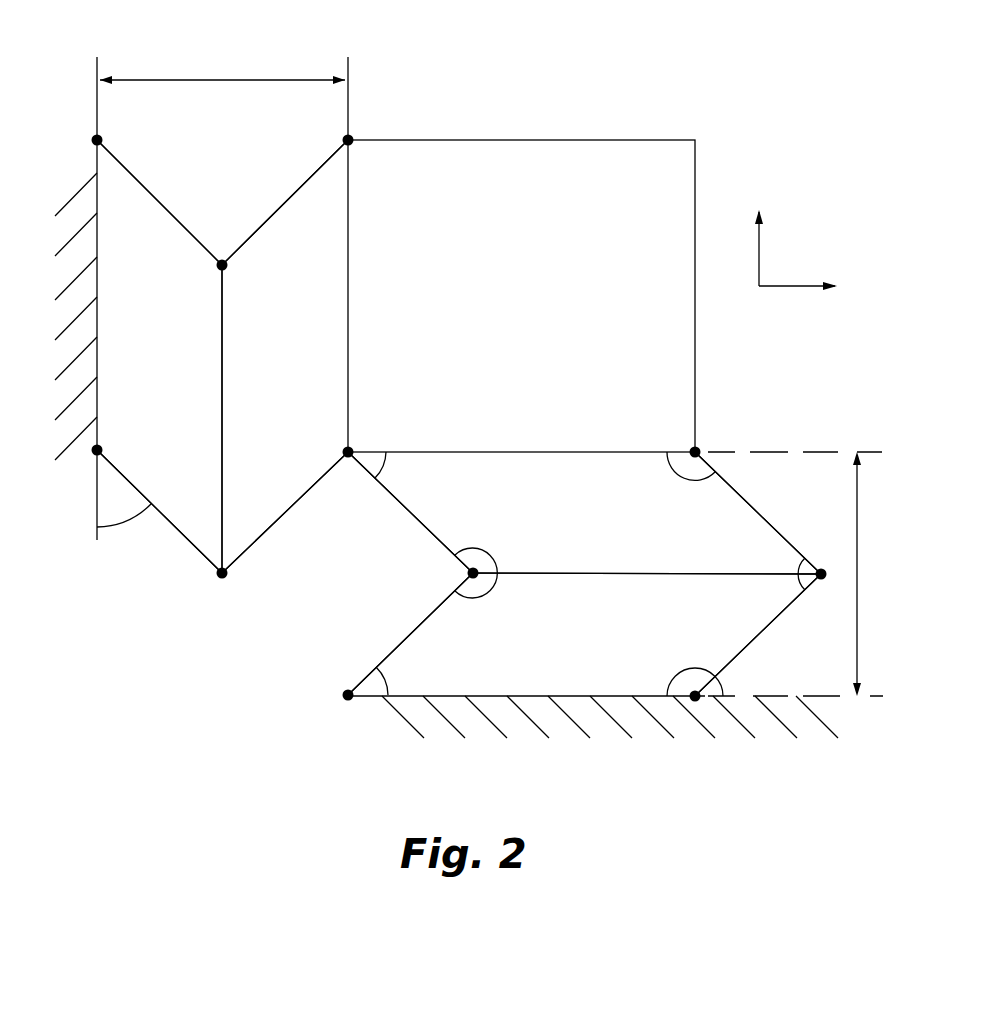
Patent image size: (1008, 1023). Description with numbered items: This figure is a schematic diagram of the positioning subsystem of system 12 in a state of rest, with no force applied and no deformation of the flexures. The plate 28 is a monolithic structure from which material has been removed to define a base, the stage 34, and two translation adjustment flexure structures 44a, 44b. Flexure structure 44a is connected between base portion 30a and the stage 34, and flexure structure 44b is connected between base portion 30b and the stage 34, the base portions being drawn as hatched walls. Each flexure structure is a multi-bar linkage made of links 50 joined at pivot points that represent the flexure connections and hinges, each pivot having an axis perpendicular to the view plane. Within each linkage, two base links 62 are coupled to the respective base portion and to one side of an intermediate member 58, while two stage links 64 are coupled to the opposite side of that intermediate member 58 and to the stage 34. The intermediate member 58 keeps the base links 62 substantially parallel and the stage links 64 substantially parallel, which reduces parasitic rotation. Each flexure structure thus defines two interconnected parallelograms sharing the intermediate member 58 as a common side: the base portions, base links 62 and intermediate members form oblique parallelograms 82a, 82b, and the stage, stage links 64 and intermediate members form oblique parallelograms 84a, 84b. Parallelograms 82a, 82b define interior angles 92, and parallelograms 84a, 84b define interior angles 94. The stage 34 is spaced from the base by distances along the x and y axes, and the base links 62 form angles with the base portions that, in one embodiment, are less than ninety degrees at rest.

The positioning system 12 is at (554, 847).
The plate 28 is at (690, 112).
The base portion 30a is at (594, 762).
The base portion 30b is at (57, 329).
The stage 34 is at (534, 333).
The translation adjustment flexure structure 44a is at (758, 490).
The translation adjustment flexure structure 44b is at (215, 170).
The link 50 is at (460, 418).
The intermediate member 58 is at (222, 377).
The base link 62 is at (138, 182).
The stage link 64 is at (299, 190).
The oblique parallelogram 82a is at (420, 625).
The oblique parallelogram 82b is at (150, 195).
The oblique parallelogram 84a is at (782, 536).
The oblique parallelogram 84b is at (285, 203).
The interior angle 92 is at (485, 595).
The interior angle 94 is at (390, 465).